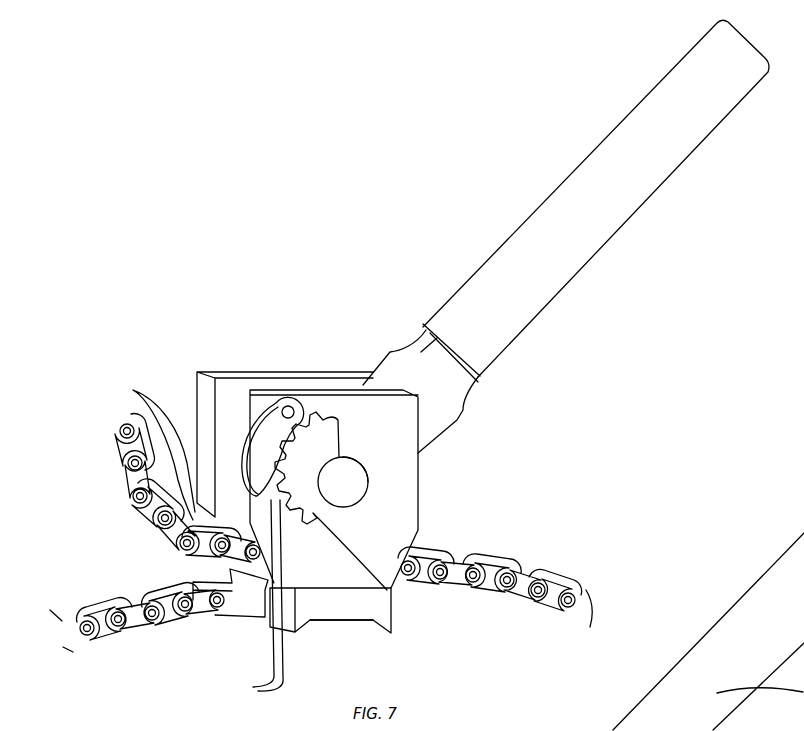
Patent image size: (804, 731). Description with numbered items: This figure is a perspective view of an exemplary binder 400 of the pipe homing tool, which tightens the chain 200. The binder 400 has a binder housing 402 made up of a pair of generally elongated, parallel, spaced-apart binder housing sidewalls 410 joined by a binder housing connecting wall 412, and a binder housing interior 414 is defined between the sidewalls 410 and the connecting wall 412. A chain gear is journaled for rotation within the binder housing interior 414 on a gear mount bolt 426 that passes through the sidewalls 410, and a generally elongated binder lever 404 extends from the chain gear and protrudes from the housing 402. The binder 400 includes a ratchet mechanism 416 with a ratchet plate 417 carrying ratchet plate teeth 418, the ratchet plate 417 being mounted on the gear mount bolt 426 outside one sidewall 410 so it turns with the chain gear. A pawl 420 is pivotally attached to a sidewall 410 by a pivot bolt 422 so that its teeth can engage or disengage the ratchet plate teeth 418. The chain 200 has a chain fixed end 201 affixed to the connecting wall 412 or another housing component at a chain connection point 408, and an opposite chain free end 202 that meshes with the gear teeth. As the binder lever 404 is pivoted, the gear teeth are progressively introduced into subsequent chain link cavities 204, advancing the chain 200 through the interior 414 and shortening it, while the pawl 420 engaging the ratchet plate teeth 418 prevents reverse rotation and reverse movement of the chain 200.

The chain 200 is at (552, 560).
The chain fixed end 201 is at (215, 612).
The chain free end 202 is at (107, 433).
The chain link cavities 204 is at (517, 570).
The binder 400 is at (240, 256).
The binder housing 402 is at (228, 370).
The binder lever 404 is at (548, 288).
The chain connection point 408 is at (233, 613).
The binder housing sidewalls 410 is at (133, 390).
The binder housing connecting wall 412 is at (395, 615).
The binder housing interior 414 is at (227, 393).
The ratchet mechanism 416 is at (380, 471).
The ratchet plate 417 is at (380, 605).
The ratchet plate teeth 418 is at (265, 686).
The pawl 420 is at (248, 427).
The pivot bolt 422 is at (292, 407).
The gear mount bolt 426 is at (347, 473).